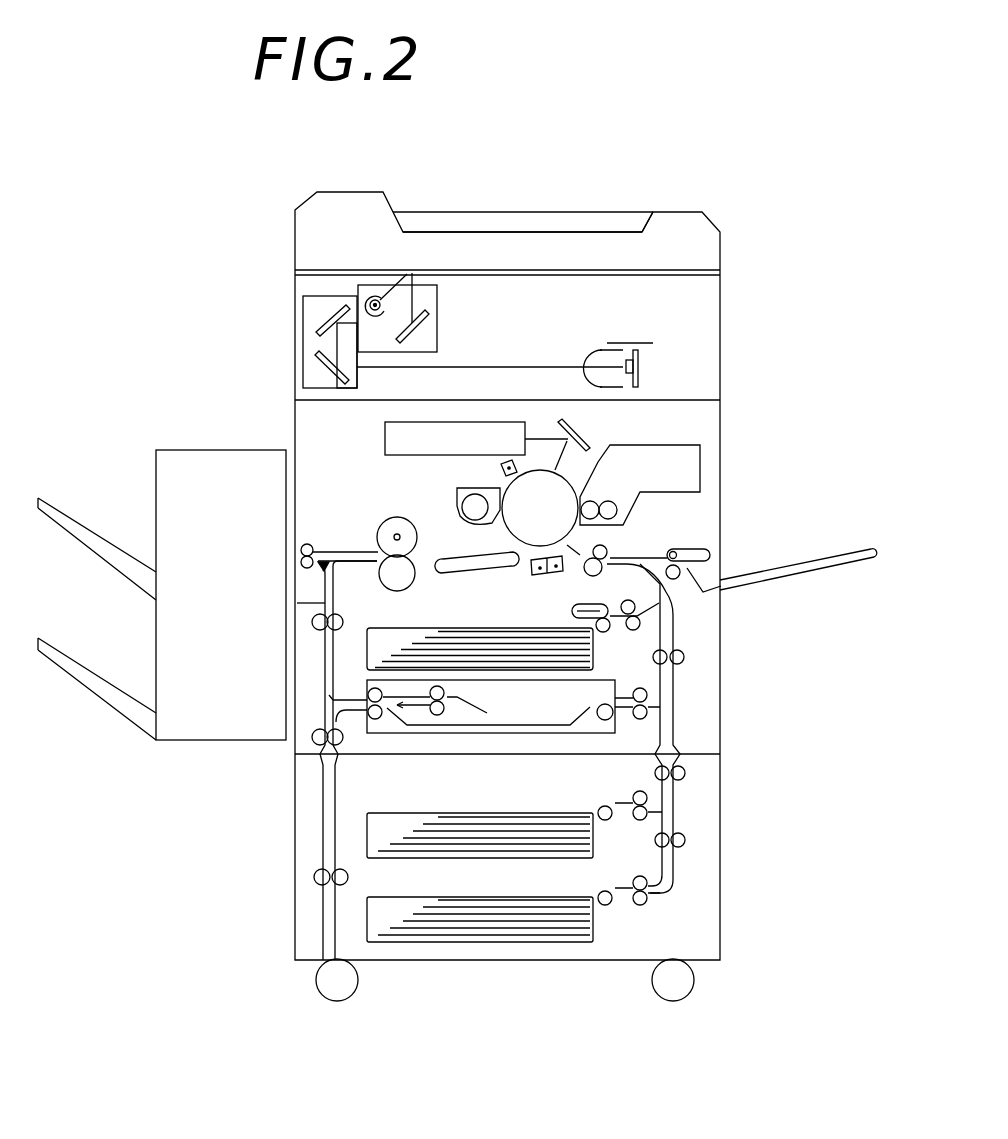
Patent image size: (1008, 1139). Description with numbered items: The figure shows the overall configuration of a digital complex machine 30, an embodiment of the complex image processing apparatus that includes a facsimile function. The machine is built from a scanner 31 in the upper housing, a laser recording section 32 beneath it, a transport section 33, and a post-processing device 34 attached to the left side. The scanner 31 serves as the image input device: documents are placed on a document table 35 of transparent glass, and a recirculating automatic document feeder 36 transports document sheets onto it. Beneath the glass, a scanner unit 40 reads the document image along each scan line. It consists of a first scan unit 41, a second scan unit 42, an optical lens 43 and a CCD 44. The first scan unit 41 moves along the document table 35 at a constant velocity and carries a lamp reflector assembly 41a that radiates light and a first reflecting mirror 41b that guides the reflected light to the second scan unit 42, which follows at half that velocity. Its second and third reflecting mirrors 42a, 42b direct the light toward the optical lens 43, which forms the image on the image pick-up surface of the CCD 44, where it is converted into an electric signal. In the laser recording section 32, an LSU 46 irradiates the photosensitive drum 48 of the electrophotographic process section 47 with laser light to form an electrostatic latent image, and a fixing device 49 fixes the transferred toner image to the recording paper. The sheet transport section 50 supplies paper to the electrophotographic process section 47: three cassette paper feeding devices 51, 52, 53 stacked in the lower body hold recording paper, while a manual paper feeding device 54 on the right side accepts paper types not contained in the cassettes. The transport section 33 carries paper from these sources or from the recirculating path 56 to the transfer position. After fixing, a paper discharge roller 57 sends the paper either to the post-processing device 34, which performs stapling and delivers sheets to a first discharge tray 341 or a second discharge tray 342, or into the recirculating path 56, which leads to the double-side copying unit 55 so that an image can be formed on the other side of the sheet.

The digital complex machine 30 is at (796, 327).
The scanner 31 is at (720, 308).
The laser recording section 32 is at (559, 559).
The transport section 33 is at (648, 554).
The post-processing device 34 is at (162, 563).
The first discharge tray 341 is at (80, 530).
The second discharge tray 342 is at (87, 678).
The document table 35 is at (525, 272).
The recirculating automatic document feeder 36 is at (593, 243).
The scanner unit 40 is at (416, 350).
The first scan unit 41 is at (444, 322).
The lamp reflector assembly 41a is at (437, 293).
The first reflecting mirror 41b is at (437, 323).
The second scan unit 42 is at (268, 368).
The second reflecting mirror 42a is at (322, 322).
The third reflecting mirror 42b is at (315, 365).
The optical lens 43 is at (574, 360).
The CCD 44 is at (627, 358).
The LSU 46 is at (399, 443).
The electrophotographic process section 47 is at (688, 432).
The photosensitive drum 48 is at (584, 490).
The fixing device 49 is at (418, 533).
The sheet transport section 50 is at (496, 745).
The cassette paper feeding device 51 is at (415, 630).
The cassette paper feeding device 52 is at (455, 817).
The cassette paper feeding device 53 is at (455, 902).
The manual paper feeding device 54 is at (814, 563).
The double-side copying unit 55 is at (433, 733).
The recirculating path 56 is at (300, 603).
The paper discharge roller 57 is at (300, 552).